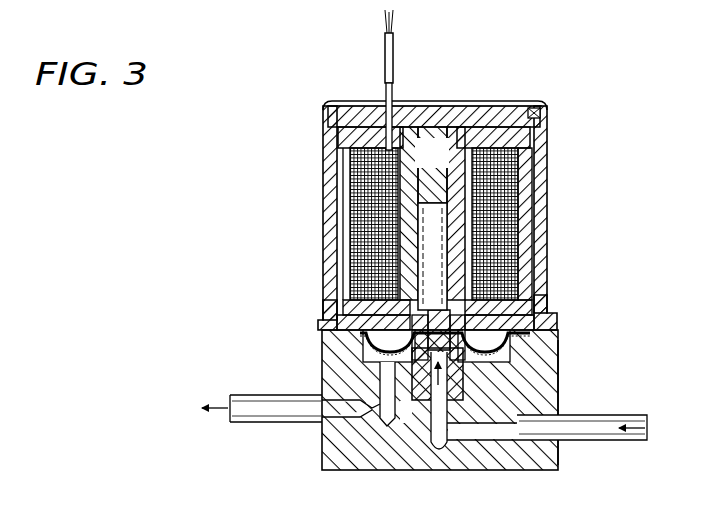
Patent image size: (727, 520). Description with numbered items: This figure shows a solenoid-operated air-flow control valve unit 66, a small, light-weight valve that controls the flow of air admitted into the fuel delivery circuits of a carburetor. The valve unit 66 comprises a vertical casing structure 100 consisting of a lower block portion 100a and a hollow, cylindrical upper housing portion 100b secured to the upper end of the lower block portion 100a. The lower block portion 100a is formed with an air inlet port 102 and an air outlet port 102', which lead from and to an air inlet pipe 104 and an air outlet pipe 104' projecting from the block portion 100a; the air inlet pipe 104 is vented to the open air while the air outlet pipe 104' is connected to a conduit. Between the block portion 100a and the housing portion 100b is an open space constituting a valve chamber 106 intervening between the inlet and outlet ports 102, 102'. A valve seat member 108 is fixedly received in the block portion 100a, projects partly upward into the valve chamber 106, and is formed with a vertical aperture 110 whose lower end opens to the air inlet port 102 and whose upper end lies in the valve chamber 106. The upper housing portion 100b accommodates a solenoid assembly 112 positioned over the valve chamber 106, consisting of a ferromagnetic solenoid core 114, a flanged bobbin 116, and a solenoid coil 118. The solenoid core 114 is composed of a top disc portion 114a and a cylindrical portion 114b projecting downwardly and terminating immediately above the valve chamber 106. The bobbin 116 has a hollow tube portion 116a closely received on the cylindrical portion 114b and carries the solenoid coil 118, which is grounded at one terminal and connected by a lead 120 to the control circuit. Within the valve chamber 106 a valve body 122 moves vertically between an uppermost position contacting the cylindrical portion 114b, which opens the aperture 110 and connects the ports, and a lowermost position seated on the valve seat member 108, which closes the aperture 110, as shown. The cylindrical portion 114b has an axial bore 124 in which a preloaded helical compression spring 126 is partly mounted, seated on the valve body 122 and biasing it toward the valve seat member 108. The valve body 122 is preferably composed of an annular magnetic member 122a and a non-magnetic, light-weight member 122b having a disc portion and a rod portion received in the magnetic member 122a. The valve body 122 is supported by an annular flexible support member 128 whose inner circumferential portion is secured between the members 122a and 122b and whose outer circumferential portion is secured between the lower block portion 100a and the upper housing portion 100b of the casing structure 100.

The air-flow control valve unit 66 is at (334, 101).
The casing structure 100 is at (316, 327).
The lower block portion 100a is at (560, 398).
The upper housing portion 100b is at (553, 291).
The air inlet port 102 is at (443, 455).
The air outlet port 102' is at (366, 436).
The air inlet pipe 104 is at (547, 446).
The air outlet pipe 104' is at (291, 434).
The valve chamber 106 is at (366, 350).
The valve seat member 108 is at (497, 425).
The vertical aperture 110 is at (430, 425).
The solenoid assembly 112 is at (338, 268).
The solenoid core 114 is at (327, 112).
The disc portion 114a is at (541, 126).
The cylindrical portion 114b is at (545, 170).
The flanged bobbin 116 is at (340, 160).
The hollow tube portion 116a is at (531, 217).
The solenoid coil 118 is at (348, 244).
The lead 120 is at (395, 28).
The valve body 122 is at (445, 397).
The magnetic member 122a is at (469, 256).
The non-magnetic member 122b is at (482, 358).
The axial bore 124 is at (432, 205).
The helical compression spring 126 is at (520, 240).
The flexible support member 128 is at (525, 345).